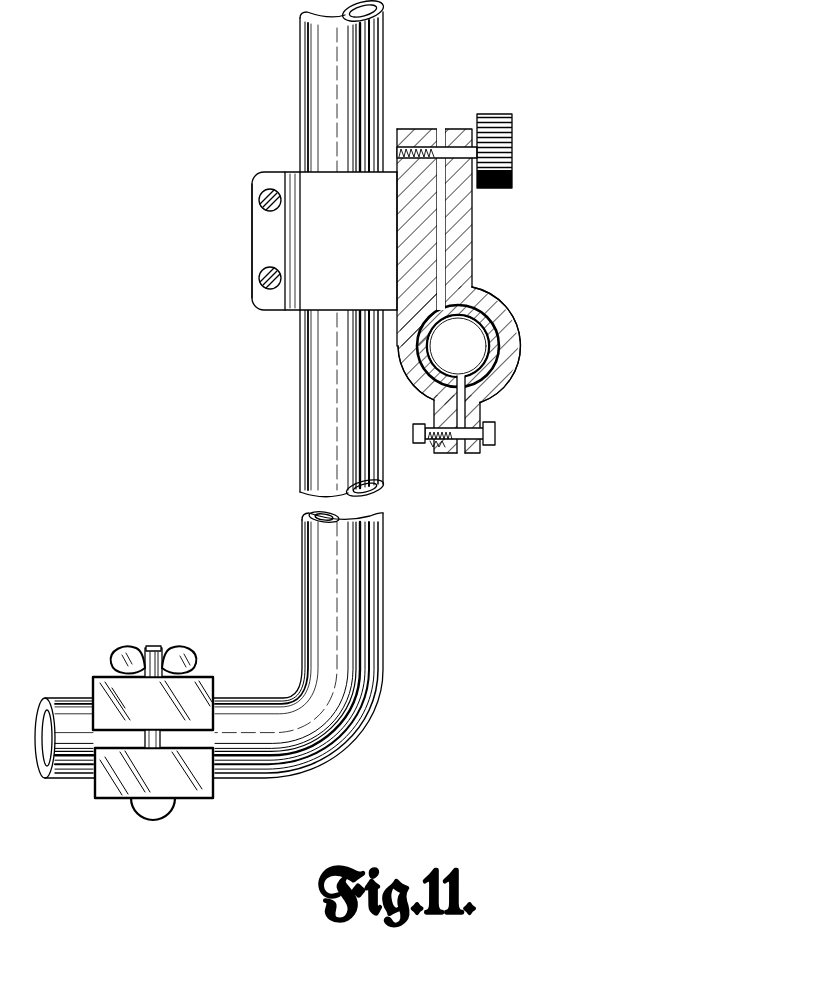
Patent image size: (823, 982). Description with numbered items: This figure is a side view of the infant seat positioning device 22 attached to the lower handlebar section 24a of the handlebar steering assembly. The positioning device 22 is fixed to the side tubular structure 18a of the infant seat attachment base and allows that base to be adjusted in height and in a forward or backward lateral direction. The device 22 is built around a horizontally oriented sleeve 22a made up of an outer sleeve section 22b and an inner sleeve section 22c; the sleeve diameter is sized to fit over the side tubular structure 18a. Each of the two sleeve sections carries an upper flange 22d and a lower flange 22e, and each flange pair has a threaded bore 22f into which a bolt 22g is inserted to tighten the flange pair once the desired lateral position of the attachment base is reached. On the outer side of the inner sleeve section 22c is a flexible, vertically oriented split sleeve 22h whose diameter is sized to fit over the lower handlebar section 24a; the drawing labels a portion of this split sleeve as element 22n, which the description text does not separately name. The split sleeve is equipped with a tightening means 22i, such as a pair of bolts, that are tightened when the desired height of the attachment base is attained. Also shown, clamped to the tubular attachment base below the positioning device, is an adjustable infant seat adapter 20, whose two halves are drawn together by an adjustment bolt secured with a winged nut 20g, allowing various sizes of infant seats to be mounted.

The side tubular structure 18a is at (385, 40).
The infant seat positioning device 22 is at (518, 133).
The upper flange 22d is at (418, 130).
The split sleeve 22h is at (293, 175).
The band clamp plate 22n is at (262, 235).
The tightening means 22i is at (268, 290).
The inner sleeve section 22c is at (410, 402).
The outer sleeve section 22b is at (510, 363).
The horizontally oriented sleeve 22a is at (500, 309).
The lower handlebar section 24a is at (488, 295).
The threaded bore 22f is at (461, 453).
The lower flange 22e is at (477, 455).
The bolt 22g is at (498, 433).
The infant seat adapter 20 is at (102, 677).
The winged nut 20g is at (175, 648).